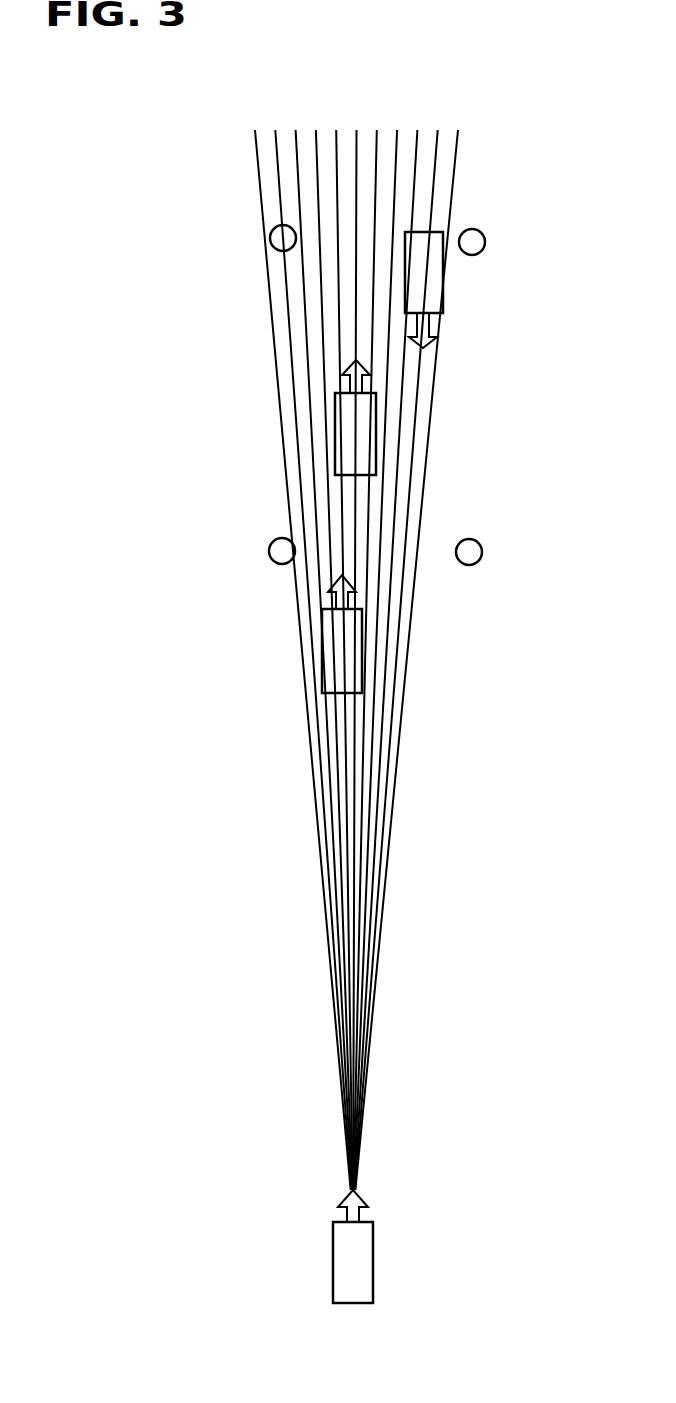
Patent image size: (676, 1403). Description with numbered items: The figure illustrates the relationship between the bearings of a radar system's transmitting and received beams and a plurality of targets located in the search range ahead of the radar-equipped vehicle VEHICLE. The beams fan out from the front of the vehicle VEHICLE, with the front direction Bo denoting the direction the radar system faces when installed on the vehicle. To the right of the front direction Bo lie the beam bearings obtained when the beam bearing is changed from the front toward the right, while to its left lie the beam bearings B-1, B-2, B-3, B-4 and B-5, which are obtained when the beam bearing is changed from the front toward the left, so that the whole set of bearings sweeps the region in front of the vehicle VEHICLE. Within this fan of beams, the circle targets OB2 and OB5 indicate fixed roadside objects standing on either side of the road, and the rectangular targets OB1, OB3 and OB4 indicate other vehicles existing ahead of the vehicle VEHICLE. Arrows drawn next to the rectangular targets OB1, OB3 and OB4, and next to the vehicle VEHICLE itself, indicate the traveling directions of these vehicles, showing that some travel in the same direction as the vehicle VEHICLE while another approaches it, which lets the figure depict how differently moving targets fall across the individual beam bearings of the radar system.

The rectangular target OB1 is at (362, 648).
The circle target OB2 is at (268, 551).
The rectangular target OB3 is at (376, 425).
The rectangular target OB4 is at (443, 282).
The circle target OB5 is at (270, 238).
The vehicle VEHICLE is at (373, 1265).
The beam bearing B-5 is at (297, 642).
The beam bearing B-4 is at (307, 642).
The beam bearing B-3 is at (317, 642).
The beam bearing B-2 is at (328, 642).
The beam bearing B-1 is at (338, 642).
The front direction Bo is at (357, 646).